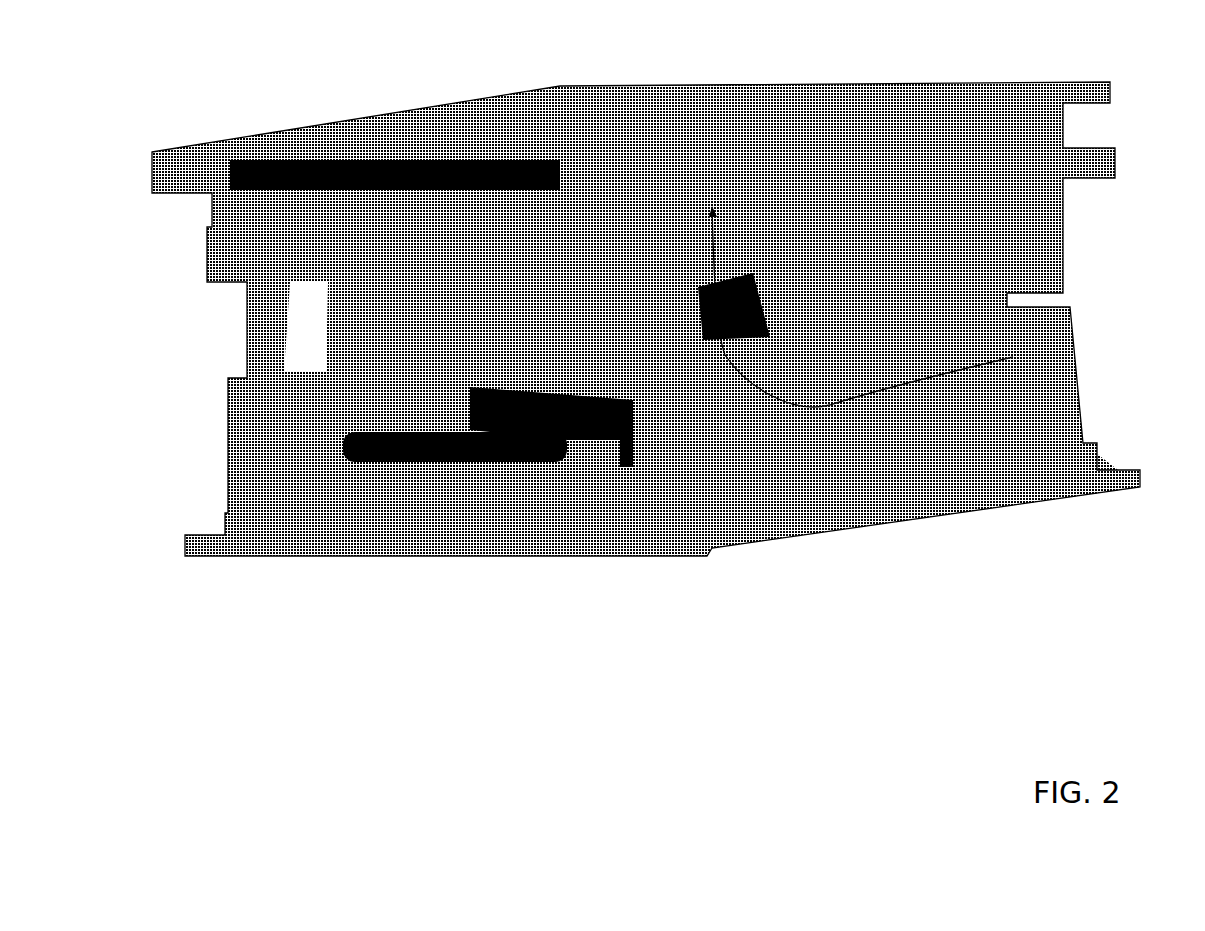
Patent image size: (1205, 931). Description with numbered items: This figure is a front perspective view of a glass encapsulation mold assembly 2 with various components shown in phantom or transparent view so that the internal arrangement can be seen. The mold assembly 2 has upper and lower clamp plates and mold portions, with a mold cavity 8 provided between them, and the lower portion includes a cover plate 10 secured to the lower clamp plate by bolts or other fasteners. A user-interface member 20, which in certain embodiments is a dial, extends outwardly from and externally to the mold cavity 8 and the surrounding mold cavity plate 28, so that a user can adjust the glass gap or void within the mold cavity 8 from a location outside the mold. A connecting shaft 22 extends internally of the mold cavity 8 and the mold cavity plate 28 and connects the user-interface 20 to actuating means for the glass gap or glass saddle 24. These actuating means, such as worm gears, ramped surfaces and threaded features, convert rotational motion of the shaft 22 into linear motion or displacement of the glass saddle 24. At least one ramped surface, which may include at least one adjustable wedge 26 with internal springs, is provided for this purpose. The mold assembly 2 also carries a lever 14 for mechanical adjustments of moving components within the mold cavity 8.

The mold assembly 2 is at (255, 124).
The mold cavity 8 is at (1002, 248).
The cover plate 10 is at (1047, 337).
The lever 14 is at (570, 410).
The user-interface 20 is at (235, 268).
The connecting shaft 22 is at (433, 243).
The glass saddle 24 is at (608, 277).
The adjustable wedge 26 is at (690, 237).
The mold cavity plate 28 is at (1047, 223).